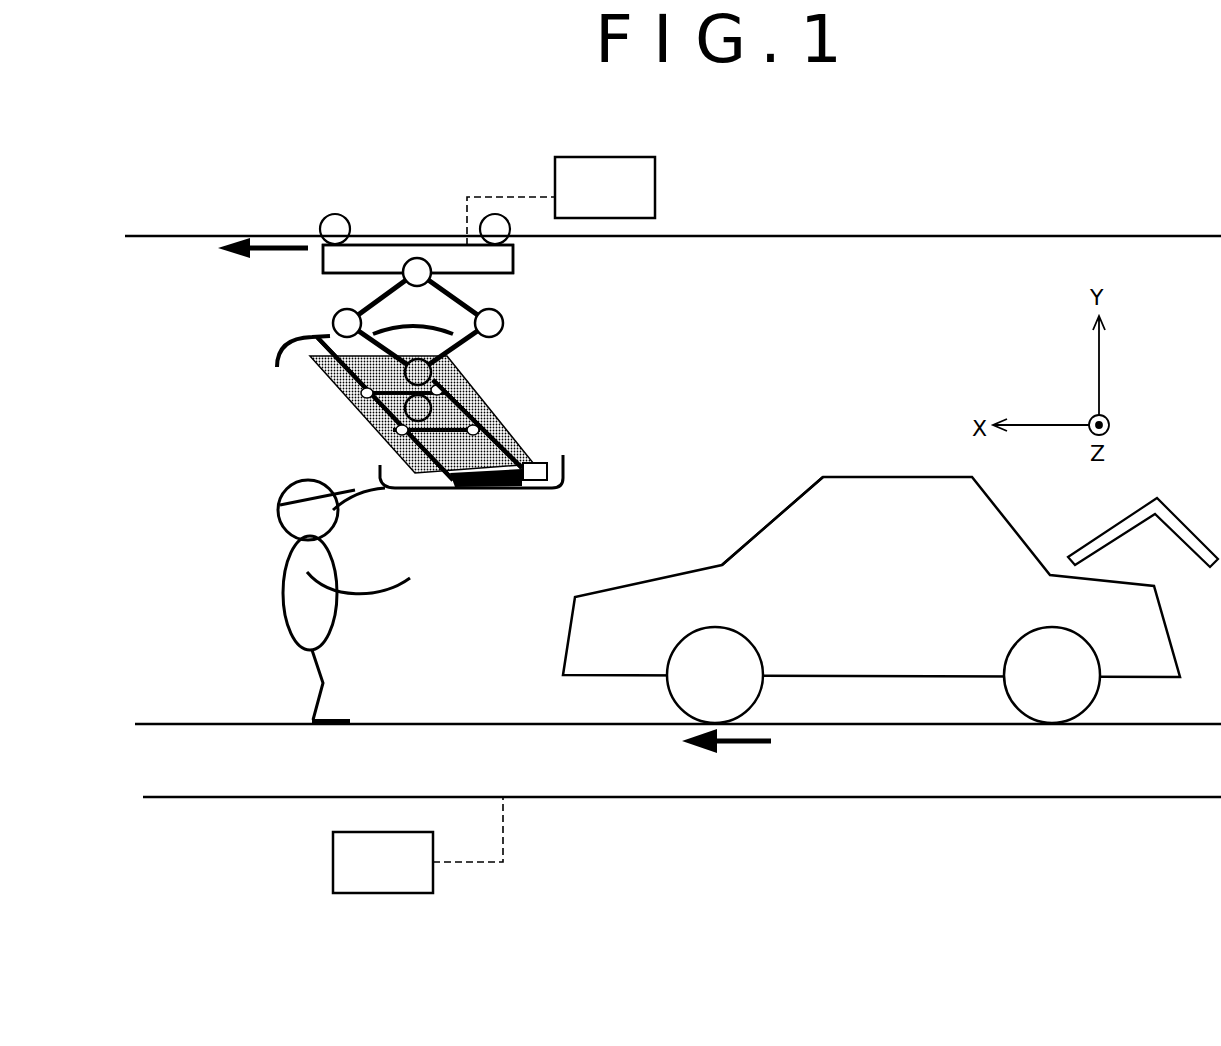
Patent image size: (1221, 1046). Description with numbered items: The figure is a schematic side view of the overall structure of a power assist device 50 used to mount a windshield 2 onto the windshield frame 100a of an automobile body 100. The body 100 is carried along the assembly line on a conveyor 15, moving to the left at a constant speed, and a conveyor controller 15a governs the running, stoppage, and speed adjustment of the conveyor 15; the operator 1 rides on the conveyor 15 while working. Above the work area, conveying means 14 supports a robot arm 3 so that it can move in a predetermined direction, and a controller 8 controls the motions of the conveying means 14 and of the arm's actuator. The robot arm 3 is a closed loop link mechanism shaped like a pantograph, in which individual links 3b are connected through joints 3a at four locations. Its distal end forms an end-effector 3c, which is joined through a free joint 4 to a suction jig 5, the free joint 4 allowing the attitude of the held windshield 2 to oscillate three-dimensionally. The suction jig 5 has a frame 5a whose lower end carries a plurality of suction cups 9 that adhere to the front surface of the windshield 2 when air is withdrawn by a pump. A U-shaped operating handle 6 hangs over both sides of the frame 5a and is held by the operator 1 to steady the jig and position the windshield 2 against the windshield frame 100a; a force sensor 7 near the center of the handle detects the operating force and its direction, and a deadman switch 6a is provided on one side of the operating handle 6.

The operator 1 is at (288, 553).
The windshield 2 is at (350, 432).
The robot arm 3 is at (316, 302).
The joints 3a is at (418, 258).
The links 3b is at (375, 294).
The end-effector 3c is at (404, 412).
The free joint 4 is at (475, 393).
The suction jig 5 is at (392, 453).
The frame 5a is at (495, 431).
The operating handle 6 is at (420, 493).
The deadman switch 6a is at (541, 452).
The force sensor 7 is at (480, 493).
The controller 8 is at (657, 160).
The suction cups 9 is at (488, 415).
The conveying means 14 is at (390, 250).
The conveyor 15 is at (666, 748).
The conveyor controller 15a is at (332, 867).
The power assist device 50 is at (608, 310).
The automobile body 100 is at (882, 450).
The windshield frame 100a is at (784, 507).